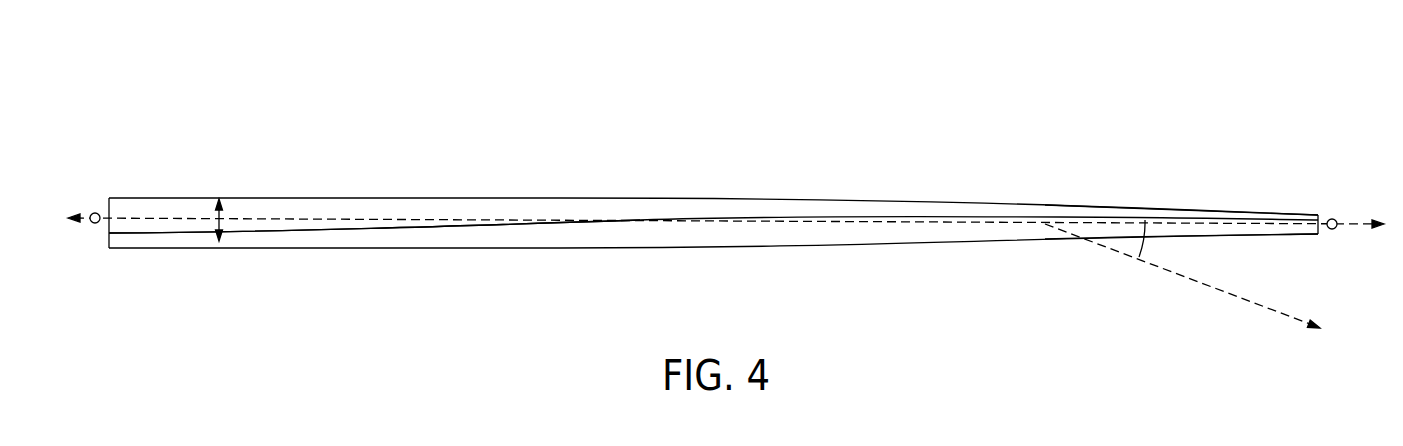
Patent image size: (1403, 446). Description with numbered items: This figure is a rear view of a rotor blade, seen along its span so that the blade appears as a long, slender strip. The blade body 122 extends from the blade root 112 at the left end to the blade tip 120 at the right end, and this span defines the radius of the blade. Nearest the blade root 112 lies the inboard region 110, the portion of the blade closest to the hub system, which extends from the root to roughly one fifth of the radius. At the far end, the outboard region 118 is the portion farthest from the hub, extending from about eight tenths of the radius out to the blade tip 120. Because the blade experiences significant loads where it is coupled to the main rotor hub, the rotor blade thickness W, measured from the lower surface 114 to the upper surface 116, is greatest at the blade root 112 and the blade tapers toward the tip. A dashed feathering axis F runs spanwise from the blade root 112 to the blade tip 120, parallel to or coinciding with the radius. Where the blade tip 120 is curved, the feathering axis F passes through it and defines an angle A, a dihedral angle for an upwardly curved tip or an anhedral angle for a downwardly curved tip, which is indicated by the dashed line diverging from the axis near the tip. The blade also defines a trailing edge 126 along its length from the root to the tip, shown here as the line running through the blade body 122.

The inboard region 110 is at (712, 179).
The blade root 112 is at (107, 243).
The lower surface 114 is at (452, 198).
The upper surface 116 is at (457, 248).
The outboard region 118 is at (1042, 155).
The blade tip 120 is at (1318, 236).
The blade body 122 is at (623, 210).
The trailing edge 126 is at (350, 232).
The rotor blade thickness W is at (227, 223).
The angle A is at (1148, 245).
The feathering axis F is at (1345, 168).